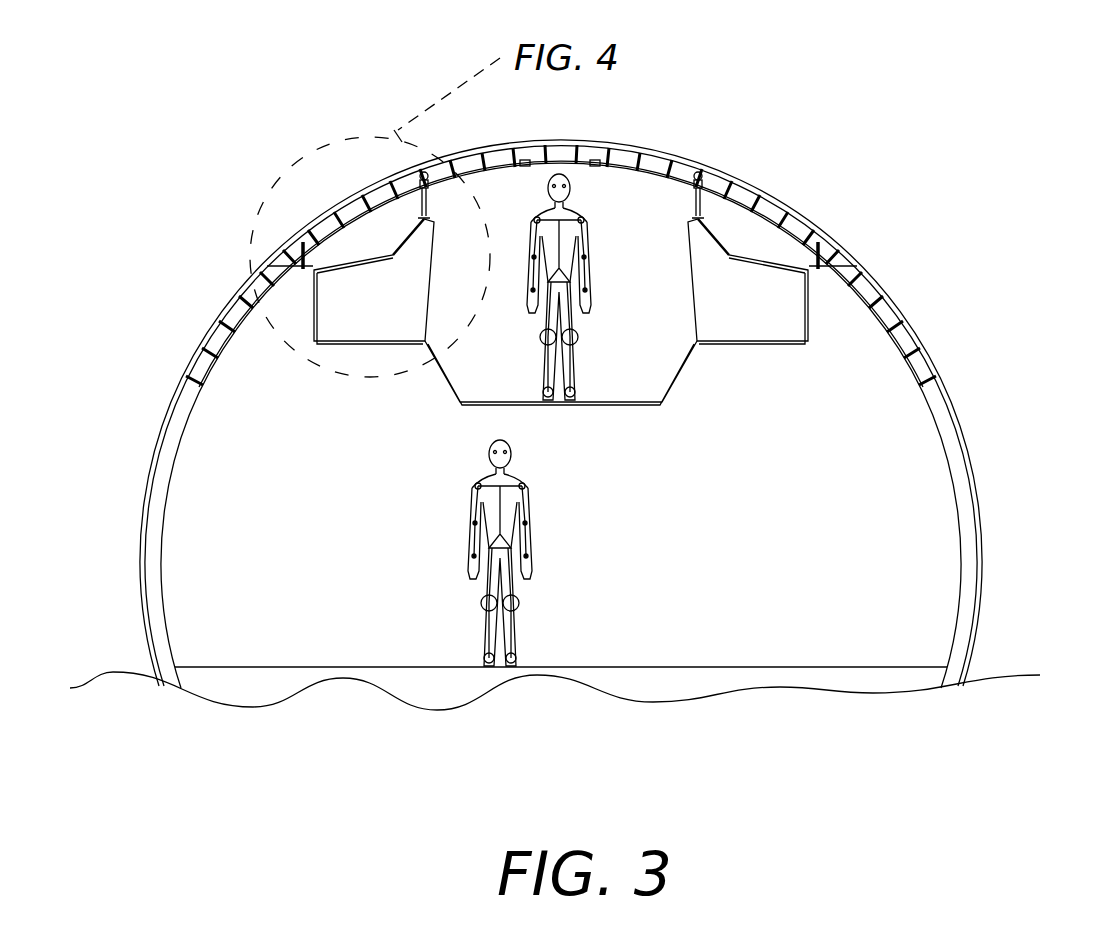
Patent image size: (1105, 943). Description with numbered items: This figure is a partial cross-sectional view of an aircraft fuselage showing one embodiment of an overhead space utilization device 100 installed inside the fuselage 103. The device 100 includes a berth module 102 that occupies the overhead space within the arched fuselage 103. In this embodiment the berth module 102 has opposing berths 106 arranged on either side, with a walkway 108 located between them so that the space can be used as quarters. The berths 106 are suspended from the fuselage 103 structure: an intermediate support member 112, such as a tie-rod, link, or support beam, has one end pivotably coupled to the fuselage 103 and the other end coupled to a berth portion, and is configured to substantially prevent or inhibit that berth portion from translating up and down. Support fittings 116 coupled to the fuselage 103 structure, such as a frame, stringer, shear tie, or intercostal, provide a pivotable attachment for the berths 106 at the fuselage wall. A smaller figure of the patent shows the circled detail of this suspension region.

The overhead space utilization device 100 is at (723, 211).
The berth module 102 is at (770, 263).
The fuselage 103 is at (973, 482).
The berths 106 is at (357, 343).
The walkway 108 is at (527, 402).
The intermediate support member 112 is at (425, 203).
The support fittings 116 is at (300, 268).